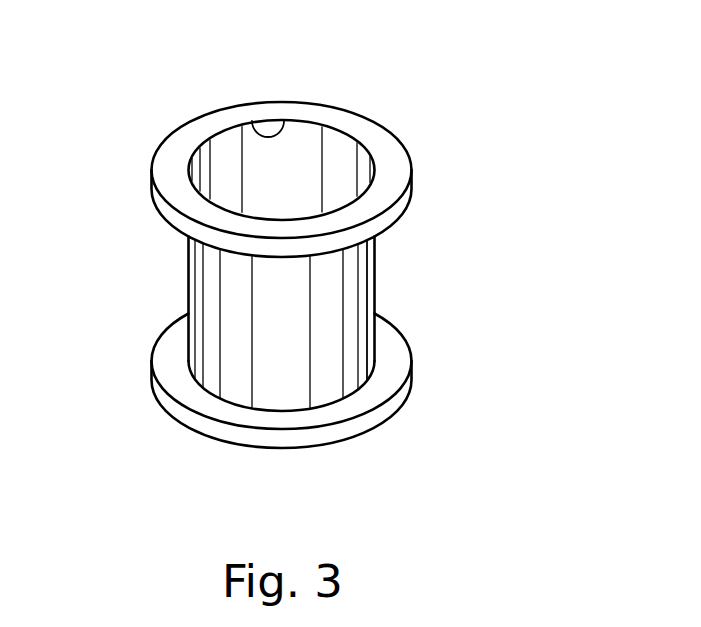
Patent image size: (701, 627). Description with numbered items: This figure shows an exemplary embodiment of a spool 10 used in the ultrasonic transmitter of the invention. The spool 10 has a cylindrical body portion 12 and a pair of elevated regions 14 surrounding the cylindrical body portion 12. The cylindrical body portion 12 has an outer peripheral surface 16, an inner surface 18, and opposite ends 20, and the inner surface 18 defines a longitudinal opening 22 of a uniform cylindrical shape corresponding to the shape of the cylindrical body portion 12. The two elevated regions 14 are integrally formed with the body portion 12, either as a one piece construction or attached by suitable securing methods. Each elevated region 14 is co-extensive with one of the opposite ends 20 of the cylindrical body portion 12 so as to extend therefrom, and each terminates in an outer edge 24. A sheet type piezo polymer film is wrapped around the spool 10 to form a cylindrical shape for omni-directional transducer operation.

The spool 10 is at (458, 162).
The cylindrical body portion 12 is at (210, 278).
The elevated regions 14 is at (168, 136).
The outer peripheral surface 16 is at (300, 318).
The inner surface 18 is at (300, 185).
The opposite ends 20 is at (287, 125).
The longitudinal opening 22 is at (308, 150).
The outer edge 24 is at (375, 227).